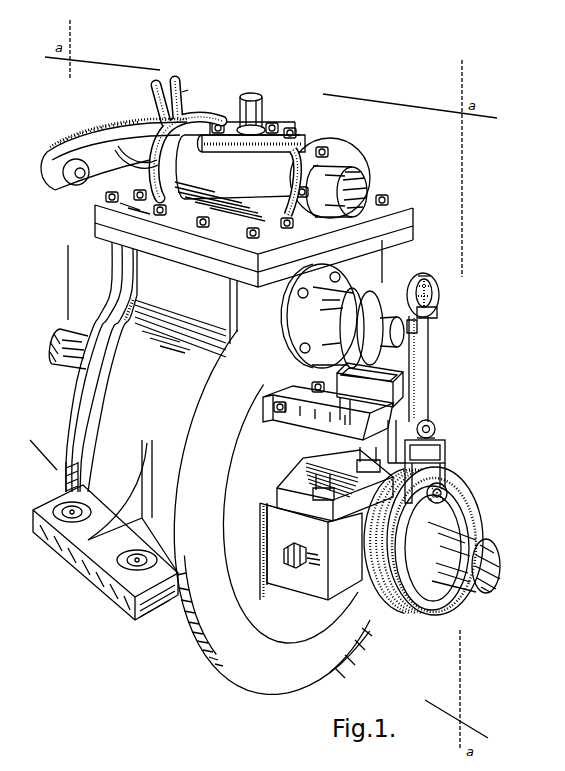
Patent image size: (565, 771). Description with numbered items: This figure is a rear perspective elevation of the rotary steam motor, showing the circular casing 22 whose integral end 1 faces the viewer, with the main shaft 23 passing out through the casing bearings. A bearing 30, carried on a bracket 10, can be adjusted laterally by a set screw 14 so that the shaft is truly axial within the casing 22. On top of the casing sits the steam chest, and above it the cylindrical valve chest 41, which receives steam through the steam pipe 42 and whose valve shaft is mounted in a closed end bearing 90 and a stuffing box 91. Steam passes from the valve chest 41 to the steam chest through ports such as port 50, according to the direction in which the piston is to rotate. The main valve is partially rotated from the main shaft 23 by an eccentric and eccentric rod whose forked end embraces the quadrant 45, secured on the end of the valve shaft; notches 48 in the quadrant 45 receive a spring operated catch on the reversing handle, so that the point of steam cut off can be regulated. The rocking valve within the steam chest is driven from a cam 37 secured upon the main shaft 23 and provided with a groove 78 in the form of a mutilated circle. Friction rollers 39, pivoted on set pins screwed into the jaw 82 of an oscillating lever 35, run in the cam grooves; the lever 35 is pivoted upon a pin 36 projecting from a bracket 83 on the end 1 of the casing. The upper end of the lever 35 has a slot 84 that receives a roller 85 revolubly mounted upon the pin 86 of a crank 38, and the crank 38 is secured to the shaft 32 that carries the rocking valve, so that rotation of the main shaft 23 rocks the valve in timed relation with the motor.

The integral end 1 is at (280, 628).
The bracket 10 is at (270, 588).
The set screw 14 is at (288, 570).
The circular casing 22 is at (133, 407).
The main shaft 23 is at (464, 557).
The bearing 30 is at (326, 523).
The shaft 32 is at (386, 323).
The oscillating lever 35 is at (429, 376).
The pin 36 is at (424, 408).
The cam 37 is at (393, 541).
The crank 38 is at (418, 329).
The friction rollers 39 is at (437, 482).
The cylindrical valve chest 41 is at (273, 170).
The steam pipe 42 is at (266, 112).
The quadrant 45 is at (114, 154).
The notches 48 is at (79, 132).
The port 50 is at (448, 492).
The groove 78 is at (415, 600).
The jaw 82 is at (437, 446).
The bracket 83 is at (313, 416).
The slot 84 is at (438, 313).
The roller 85 is at (439, 302).
The pin 86 is at (428, 277).
The closed end bearing 90 is at (366, 181).
The stuffing box 91 is at (137, 126).